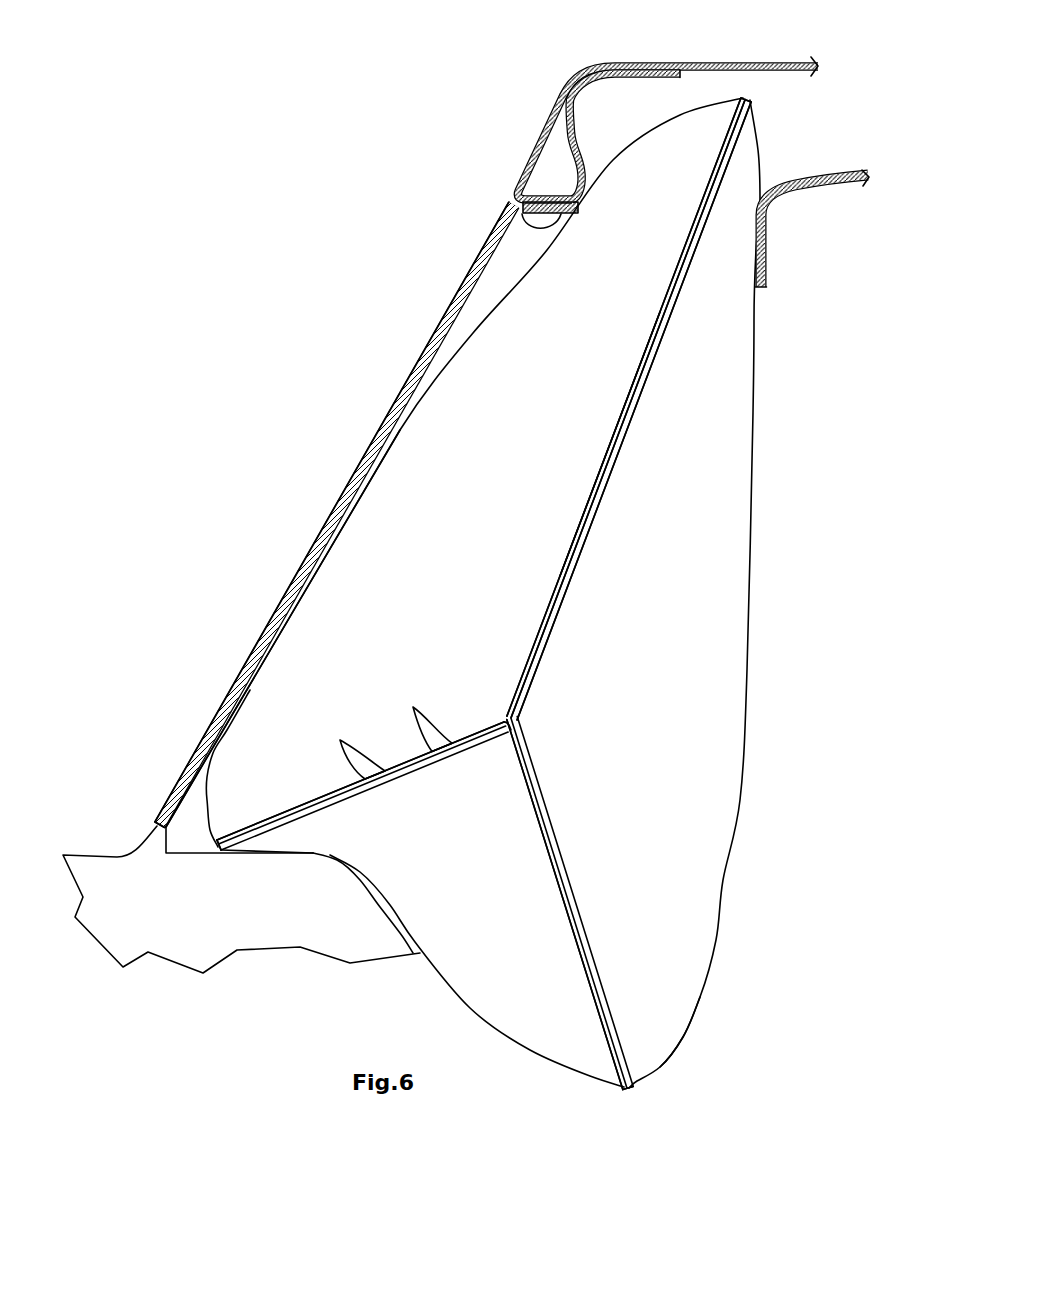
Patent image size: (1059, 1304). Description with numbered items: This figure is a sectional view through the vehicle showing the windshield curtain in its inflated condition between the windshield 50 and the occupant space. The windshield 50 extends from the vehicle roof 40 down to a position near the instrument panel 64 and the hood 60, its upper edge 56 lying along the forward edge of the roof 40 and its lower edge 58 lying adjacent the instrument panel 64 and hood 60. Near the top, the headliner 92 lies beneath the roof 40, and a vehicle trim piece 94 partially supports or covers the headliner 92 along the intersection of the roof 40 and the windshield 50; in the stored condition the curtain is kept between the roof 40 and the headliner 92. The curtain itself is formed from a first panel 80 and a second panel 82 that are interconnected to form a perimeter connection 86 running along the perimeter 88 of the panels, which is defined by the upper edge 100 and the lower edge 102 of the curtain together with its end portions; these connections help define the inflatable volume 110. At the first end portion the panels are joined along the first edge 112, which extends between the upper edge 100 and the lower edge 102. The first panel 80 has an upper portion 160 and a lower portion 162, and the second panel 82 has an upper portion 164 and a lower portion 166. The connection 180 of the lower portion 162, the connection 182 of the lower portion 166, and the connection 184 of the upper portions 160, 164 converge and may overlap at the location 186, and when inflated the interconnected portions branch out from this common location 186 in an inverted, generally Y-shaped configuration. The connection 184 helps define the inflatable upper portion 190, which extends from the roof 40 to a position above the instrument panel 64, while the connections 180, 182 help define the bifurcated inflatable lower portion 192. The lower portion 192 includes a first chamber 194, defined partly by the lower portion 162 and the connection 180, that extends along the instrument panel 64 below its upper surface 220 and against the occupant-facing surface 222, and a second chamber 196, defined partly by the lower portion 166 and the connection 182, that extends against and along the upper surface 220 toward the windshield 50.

The vehicle roof 40 is at (790, 63).
The windshield 50 is at (350, 492).
The upper edge 56 is at (510, 208).
The lower edge 58 is at (163, 818).
The hood 60 is at (122, 857).
The instrument panel 64 is at (320, 873).
The first panel 80 is at (755, 637).
The second panel 82 is at (463, 333).
The perimeter connection 86 is at (548, 608).
The perimeter 88 is at (573, 543).
The headliner 92 is at (820, 190).
The vehicle trim piece 94 is at (520, 222).
The upper edge 100 is at (752, 103).
The lower edge 102 is at (217, 857).
The inflatable volume 110 is at (480, 500).
The first edge 112 is at (653, 482).
The upper portion 160 is at (668, 328).
The lower portion 162 is at (539, 823).
The upper portion 164 is at (677, 296).
The lower portion 166 is at (349, 747).
The connection 180 is at (580, 922).
The connection 182 is at (430, 763).
The connection 184 is at (631, 413).
The location 186 is at (505, 718).
The inflatable upper portion 190 is at (560, 322).
The inflatable lower portion 192 is at (497, 787).
The first chamber 194 is at (643, 1005).
The second chamber 196 is at (273, 768).
The upper surface 220 is at (290, 852).
The surface 222 is at (400, 920).